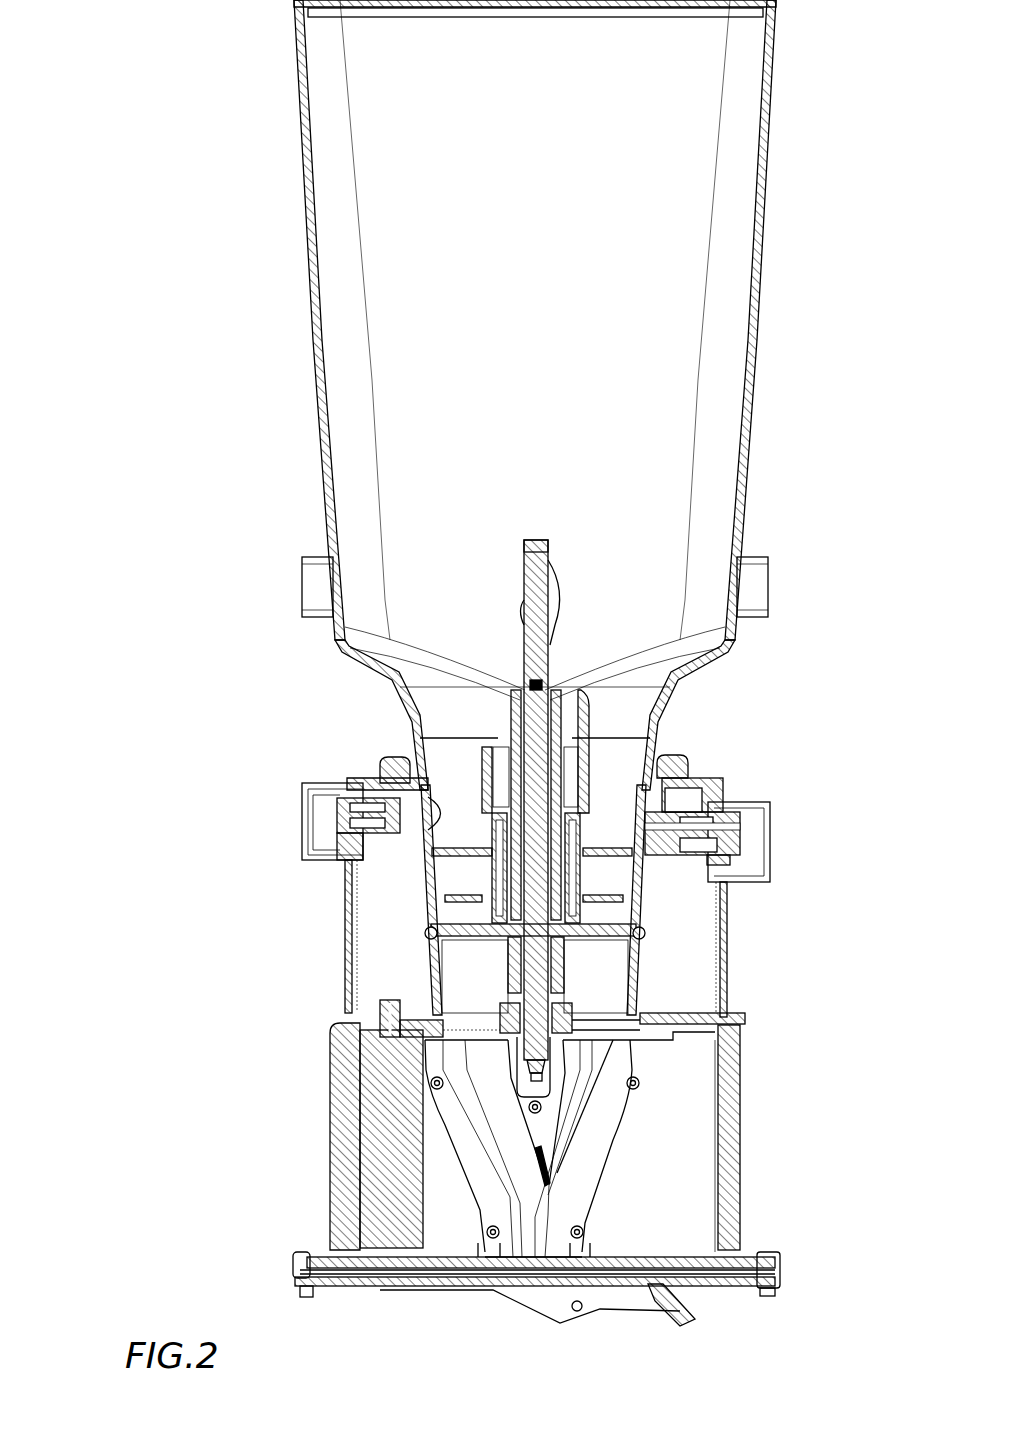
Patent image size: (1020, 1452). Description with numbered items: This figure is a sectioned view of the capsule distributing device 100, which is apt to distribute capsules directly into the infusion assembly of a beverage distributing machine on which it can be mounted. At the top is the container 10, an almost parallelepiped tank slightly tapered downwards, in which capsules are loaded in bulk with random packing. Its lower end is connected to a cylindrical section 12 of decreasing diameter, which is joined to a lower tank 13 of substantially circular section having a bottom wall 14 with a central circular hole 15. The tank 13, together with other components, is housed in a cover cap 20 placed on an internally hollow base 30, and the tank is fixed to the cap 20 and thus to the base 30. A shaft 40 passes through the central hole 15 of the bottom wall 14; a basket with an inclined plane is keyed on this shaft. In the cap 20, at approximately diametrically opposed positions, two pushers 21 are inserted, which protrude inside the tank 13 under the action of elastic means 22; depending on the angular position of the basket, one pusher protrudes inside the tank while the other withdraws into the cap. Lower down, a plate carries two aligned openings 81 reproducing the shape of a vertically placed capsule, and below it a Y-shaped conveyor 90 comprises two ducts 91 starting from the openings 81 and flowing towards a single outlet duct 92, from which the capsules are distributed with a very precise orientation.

The capsule distributing device 100 is at (200, 748).
The container 10 is at (728, 352).
The cylindrical section 12 is at (672, 712).
The lower tank 13 is at (425, 873).
The bottom wall 14 is at (633, 933).
The central circular hole 15 is at (582, 940).
The cover cap 20 is at (725, 925).
The pushers 21 is at (392, 775).
The elastic means 22 is at (340, 800).
The base 30 is at (728, 1195).
The shaft 40 is at (545, 795).
The openings 81 is at (513, 1012).
The Y-shaped conveyor 90 is at (620, 1139).
The ducts 91 is at (587, 1133).
The outlet duct 92 is at (549, 1235).